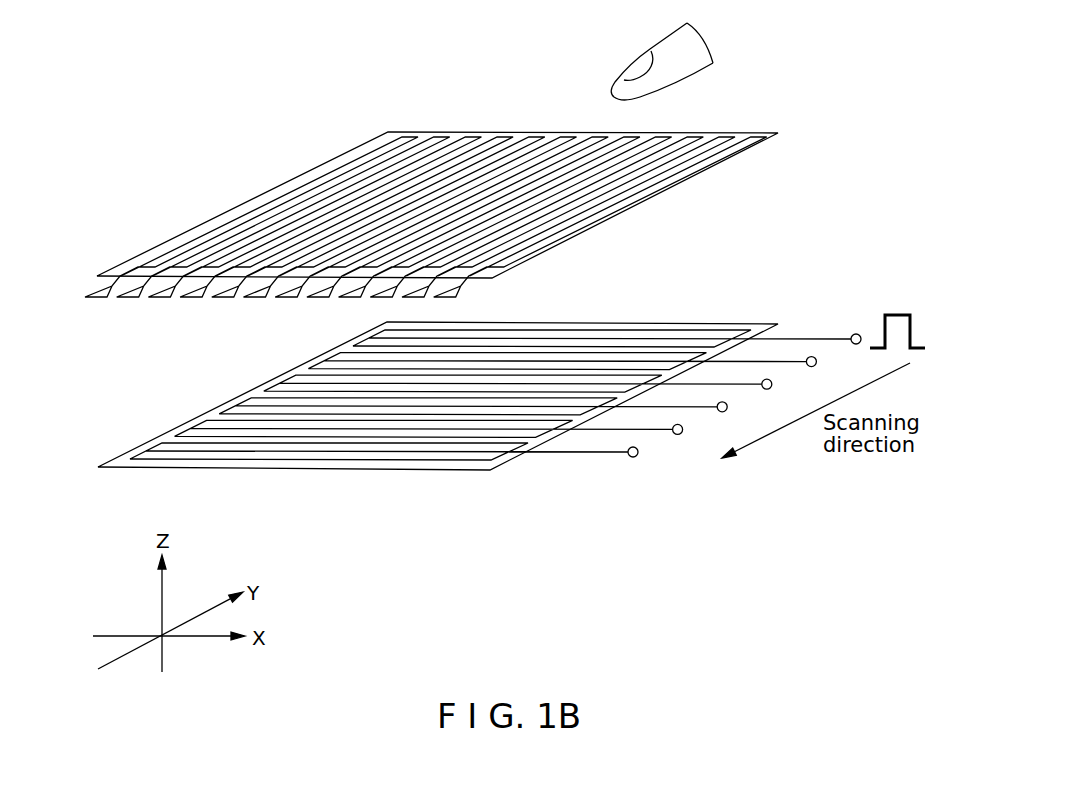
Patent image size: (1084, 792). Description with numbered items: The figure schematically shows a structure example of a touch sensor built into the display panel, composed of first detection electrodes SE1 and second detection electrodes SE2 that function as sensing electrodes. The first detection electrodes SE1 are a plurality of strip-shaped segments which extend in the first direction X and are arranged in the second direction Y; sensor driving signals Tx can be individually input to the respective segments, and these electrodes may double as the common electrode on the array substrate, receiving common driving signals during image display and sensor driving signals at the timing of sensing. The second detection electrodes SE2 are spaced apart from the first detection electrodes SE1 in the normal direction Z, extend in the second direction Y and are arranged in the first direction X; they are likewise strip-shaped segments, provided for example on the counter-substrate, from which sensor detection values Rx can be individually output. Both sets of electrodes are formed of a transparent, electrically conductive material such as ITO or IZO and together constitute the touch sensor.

The second detection electrodes SE2 is at (431, 225).
The sensor detection values Rx is at (176, 307).
The first detection electrodes SE1 is at (511, 364).
The sensor driving signals Tx is at (897, 312).